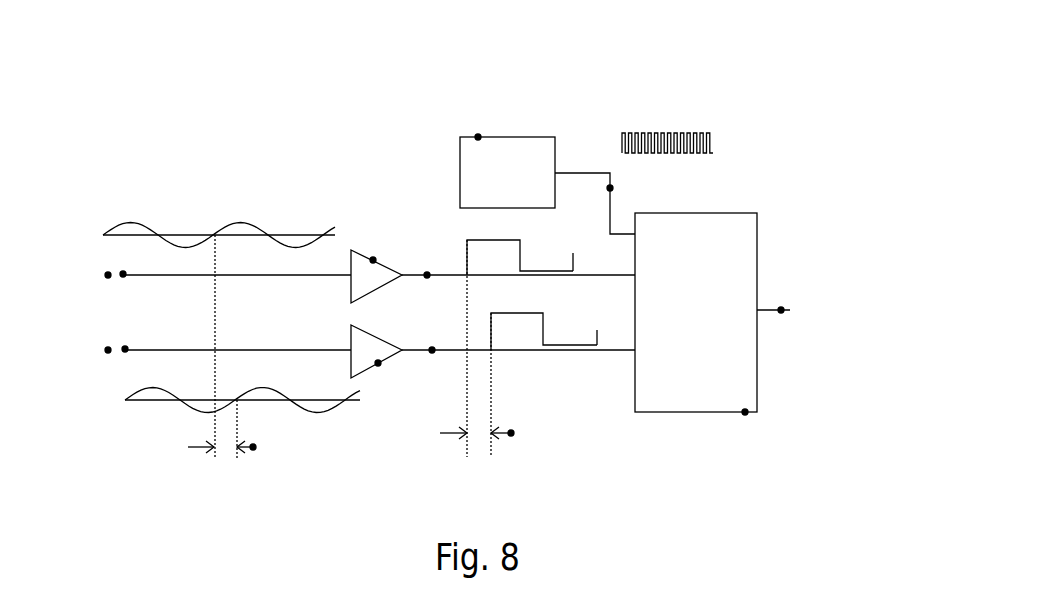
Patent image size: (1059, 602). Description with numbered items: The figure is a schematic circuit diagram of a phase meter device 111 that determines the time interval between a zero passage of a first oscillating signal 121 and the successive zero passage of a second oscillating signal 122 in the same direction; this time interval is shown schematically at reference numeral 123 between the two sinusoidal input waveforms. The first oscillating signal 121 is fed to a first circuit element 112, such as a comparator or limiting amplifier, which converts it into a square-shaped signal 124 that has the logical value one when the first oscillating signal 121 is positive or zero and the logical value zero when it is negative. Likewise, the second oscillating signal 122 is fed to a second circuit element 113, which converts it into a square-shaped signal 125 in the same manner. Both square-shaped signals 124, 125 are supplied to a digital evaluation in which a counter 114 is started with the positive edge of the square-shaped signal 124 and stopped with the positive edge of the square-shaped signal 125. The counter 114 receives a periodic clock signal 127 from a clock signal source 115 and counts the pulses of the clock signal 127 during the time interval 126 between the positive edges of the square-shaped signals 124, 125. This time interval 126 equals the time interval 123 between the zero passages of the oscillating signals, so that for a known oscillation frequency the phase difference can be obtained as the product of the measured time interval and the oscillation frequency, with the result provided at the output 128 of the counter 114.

The phase meter device 111 is at (649, 78).
The first circuit element 112 is at (373, 260).
The second circuit element 113 is at (378, 363).
The counter 114 is at (745, 412).
The clock signal source 115 is at (478, 137).
The first oscillating signal 121 is at (121, 271).
The second oscillating signal 122 is at (124, 352).
The time interval 123 is at (253, 447).
The square-shaped signal 124 is at (427, 275).
The square-shaped signal 125 is at (432, 350).
The time interval 126 is at (511, 433).
The clock signal 127 is at (610, 188).
The output signal 128 is at (781, 310).